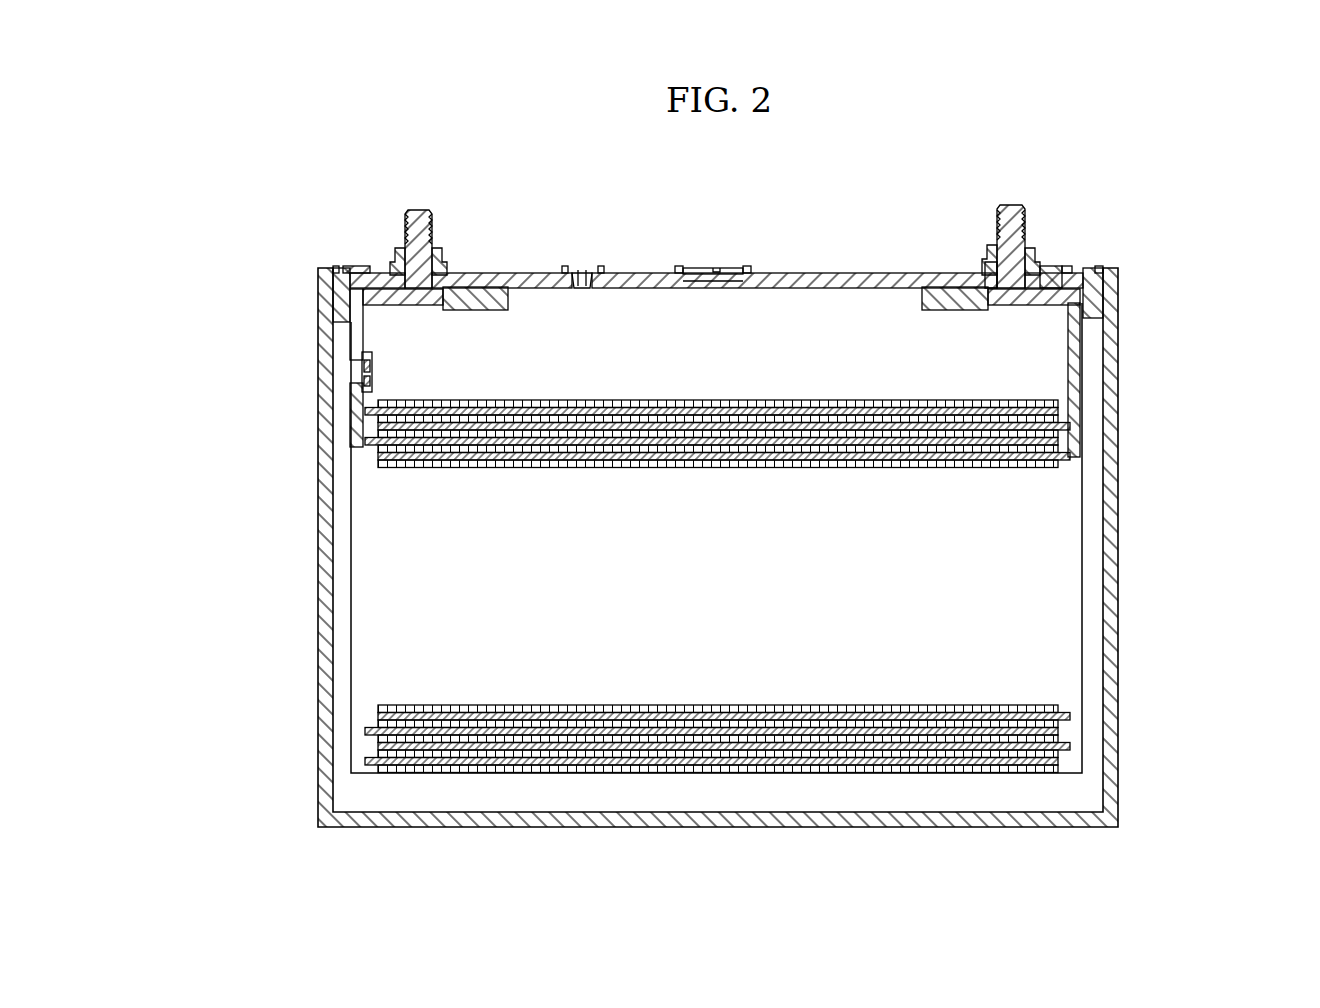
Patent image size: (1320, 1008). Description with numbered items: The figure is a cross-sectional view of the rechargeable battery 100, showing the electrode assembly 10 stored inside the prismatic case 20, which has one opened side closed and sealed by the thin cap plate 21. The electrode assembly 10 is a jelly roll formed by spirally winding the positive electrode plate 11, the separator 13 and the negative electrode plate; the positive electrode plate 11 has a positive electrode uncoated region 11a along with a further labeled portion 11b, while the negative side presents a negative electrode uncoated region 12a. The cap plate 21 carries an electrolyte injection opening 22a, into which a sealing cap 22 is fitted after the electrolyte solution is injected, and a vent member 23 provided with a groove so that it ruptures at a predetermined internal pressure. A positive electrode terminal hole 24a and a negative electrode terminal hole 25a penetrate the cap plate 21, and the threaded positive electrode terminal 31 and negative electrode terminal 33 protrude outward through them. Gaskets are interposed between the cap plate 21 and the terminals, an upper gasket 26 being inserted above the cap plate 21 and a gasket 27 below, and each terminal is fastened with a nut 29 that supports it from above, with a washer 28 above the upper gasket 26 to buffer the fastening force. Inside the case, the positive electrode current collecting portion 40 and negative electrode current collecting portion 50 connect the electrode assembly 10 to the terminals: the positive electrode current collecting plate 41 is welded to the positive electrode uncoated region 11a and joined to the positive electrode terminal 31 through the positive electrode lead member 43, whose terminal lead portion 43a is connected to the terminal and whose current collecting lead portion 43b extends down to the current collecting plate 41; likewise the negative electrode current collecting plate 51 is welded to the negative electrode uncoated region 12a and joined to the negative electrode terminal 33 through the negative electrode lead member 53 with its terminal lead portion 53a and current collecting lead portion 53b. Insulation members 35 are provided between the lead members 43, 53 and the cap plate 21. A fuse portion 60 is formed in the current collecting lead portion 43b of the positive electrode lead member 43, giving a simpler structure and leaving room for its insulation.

The rechargeable battery 100 is at (1157, 205).
The electrode assembly 10 is at (685, 614).
The positive electrode plate 11 is at (624, 766).
The positive electrode uncoated region 11a is at (365, 762).
The first electrode coated region 11b is at (400, 778).
The negative electrode uncoated region 12a is at (1072, 741).
The separator 13 is at (425, 738).
The case 20 is at (1118, 662).
The cap plate 21 is at (800, 273).
The sealing cap 22 is at (577, 270).
The electrolyte injection opening 22a is at (601, 266).
The vent member 23 is at (728, 268).
The positive electrode terminal hole 24a is at (439, 258).
The negative electrode terminal hole 25a is at (990, 265).
The upper gasket 26 is at (983, 257).
The gasket 27 is at (985, 272).
The washer 28 is at (1042, 264).
The nut 29 is at (393, 253).
The positive electrode terminal 31 is at (416, 210).
The negative electrode terminal 33 is at (1010, 205).
The insulation member 35 is at (341, 288).
The positive electrode current collecting portion 40 is at (434, 531).
The positive electrode current collecting plate 41 is at (363, 548).
The positive electrode lead member 43 is at (323, 368).
The terminal lead portion 43a is at (393, 306).
The current collecting lead portion 43b is at (362, 347).
The negative electrode current collecting portion 50 is at (998, 531).
The negative electrode current collecting plate 51 is at (1075, 539).
The negative electrode lead member 53 is at (1107, 373).
The terminal lead portion 53a is at (1032, 303).
The current collecting lead portion 53b is at (1171, 320).
The fuse portion 60 is at (404, 368).